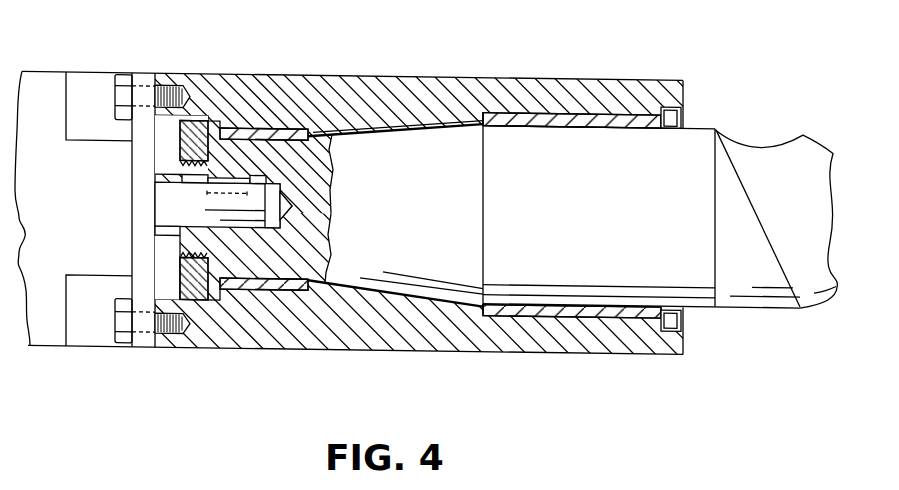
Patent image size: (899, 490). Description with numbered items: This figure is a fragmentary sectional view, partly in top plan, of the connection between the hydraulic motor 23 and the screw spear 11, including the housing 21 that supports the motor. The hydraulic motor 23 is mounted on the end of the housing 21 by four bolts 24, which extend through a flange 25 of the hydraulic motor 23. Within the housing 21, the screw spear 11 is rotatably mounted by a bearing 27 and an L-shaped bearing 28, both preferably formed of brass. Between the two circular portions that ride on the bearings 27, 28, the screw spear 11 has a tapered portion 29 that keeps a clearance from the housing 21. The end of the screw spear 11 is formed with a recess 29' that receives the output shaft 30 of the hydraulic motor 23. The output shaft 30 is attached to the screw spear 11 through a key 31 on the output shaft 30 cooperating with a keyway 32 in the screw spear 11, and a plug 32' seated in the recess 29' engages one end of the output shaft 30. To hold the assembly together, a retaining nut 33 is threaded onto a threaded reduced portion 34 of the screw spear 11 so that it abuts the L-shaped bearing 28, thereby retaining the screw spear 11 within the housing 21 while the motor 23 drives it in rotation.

The screw spear 11 is at (765, 131).
The housing 21 is at (270, 346).
The hydraulic motor 23 is at (50, 70).
The bolts 24 is at (180, 70).
The flange 25 is at (145, 346).
The bearing 27 is at (615, 105).
The L-shaped bearing 28 is at (262, 126).
The tapered portion 29 is at (554, 175).
The recess 29' is at (187, 205).
The output shaft 30 is at (284, 219).
The key 31 is at (243, 169).
The keyway 32 is at (317, 178).
The plug 32' is at (342, 207).
The retaining nut 33 is at (190, 272).
The threaded reduced portion 34 is at (195, 158).